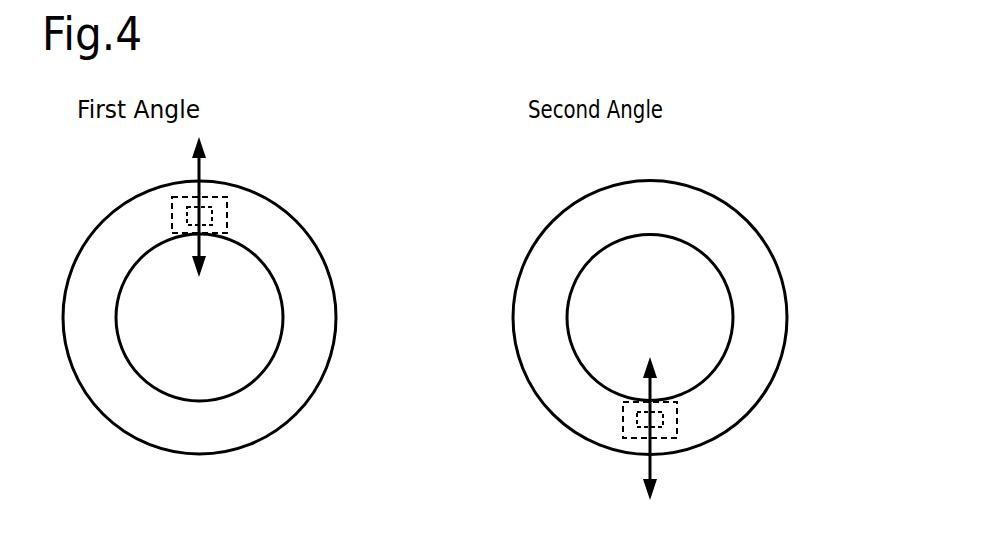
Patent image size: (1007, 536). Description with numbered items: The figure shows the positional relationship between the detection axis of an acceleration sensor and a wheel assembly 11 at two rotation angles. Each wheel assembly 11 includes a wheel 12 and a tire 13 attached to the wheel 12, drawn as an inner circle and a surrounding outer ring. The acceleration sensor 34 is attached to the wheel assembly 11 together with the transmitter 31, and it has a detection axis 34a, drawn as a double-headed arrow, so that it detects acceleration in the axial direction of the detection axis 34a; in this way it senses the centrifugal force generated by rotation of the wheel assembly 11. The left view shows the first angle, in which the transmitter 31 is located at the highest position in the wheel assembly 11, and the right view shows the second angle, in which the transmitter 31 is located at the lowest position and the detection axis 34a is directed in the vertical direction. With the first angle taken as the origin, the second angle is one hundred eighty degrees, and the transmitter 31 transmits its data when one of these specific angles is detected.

The wheel assembly 11 is at (393, 258).
The wheel 12 is at (269, 270).
The tire 13 is at (334, 297).
The transmitter 31 is at (178, 195).
The acceleration sensor 34 is at (186, 217).
The detection axis 34a is at (200, 167).